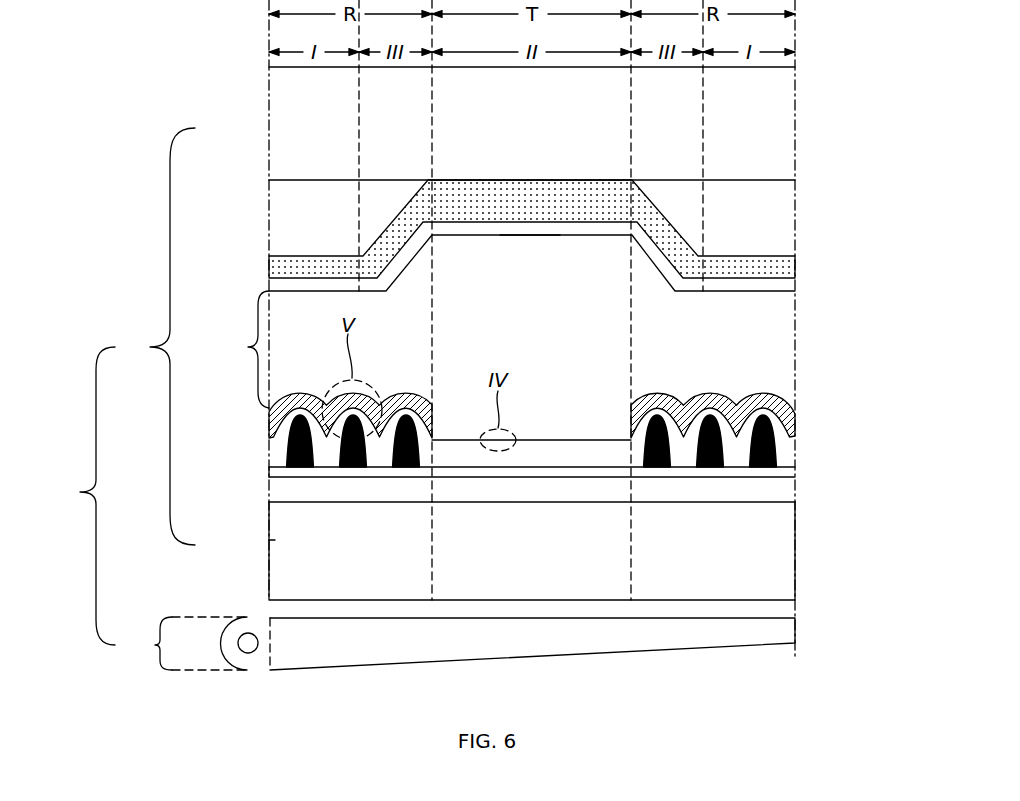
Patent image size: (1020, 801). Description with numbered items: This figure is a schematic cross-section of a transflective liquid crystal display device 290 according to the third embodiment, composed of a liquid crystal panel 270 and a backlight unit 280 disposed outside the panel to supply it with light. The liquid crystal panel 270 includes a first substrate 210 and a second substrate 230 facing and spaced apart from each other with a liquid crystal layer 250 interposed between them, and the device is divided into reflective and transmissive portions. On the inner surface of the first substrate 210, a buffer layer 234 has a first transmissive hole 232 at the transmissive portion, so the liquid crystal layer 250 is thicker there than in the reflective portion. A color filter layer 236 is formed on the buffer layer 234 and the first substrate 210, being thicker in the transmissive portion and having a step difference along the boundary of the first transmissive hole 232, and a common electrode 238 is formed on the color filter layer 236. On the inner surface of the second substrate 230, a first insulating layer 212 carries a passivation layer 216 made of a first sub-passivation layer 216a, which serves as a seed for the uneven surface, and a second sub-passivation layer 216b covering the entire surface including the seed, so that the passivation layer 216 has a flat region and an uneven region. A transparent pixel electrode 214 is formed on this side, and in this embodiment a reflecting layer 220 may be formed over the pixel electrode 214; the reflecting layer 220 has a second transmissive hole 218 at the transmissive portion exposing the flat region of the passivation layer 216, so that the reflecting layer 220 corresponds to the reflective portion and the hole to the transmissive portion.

The first substrate 210 is at (269, 120).
The first insulating layer 212 is at (770, 495).
The transparent pixel electrode 214 is at (795, 478).
The passivation layer 216 is at (881, 433).
The first sub-passivation layer 216a is at (795, 459).
The second sub-passivation layer 216b is at (795, 437).
The second transmissive hole 218 is at (531, 370).
The reflecting layer 220 is at (795, 418).
The second substrate 230 is at (269, 540).
The first transmissive hole 232 is at (519, 244).
The buffer layer 234 is at (788, 216).
The color filter layer 236 is at (788, 268).
The common electrode 238 is at (788, 287).
The liquid crystal layer 250 is at (241, 349).
The liquid crystal panel 270 is at (156, 336).
The backlight unit 280 is at (459, 643).
The transflective liquid crystal display device 290 is at (80, 496).